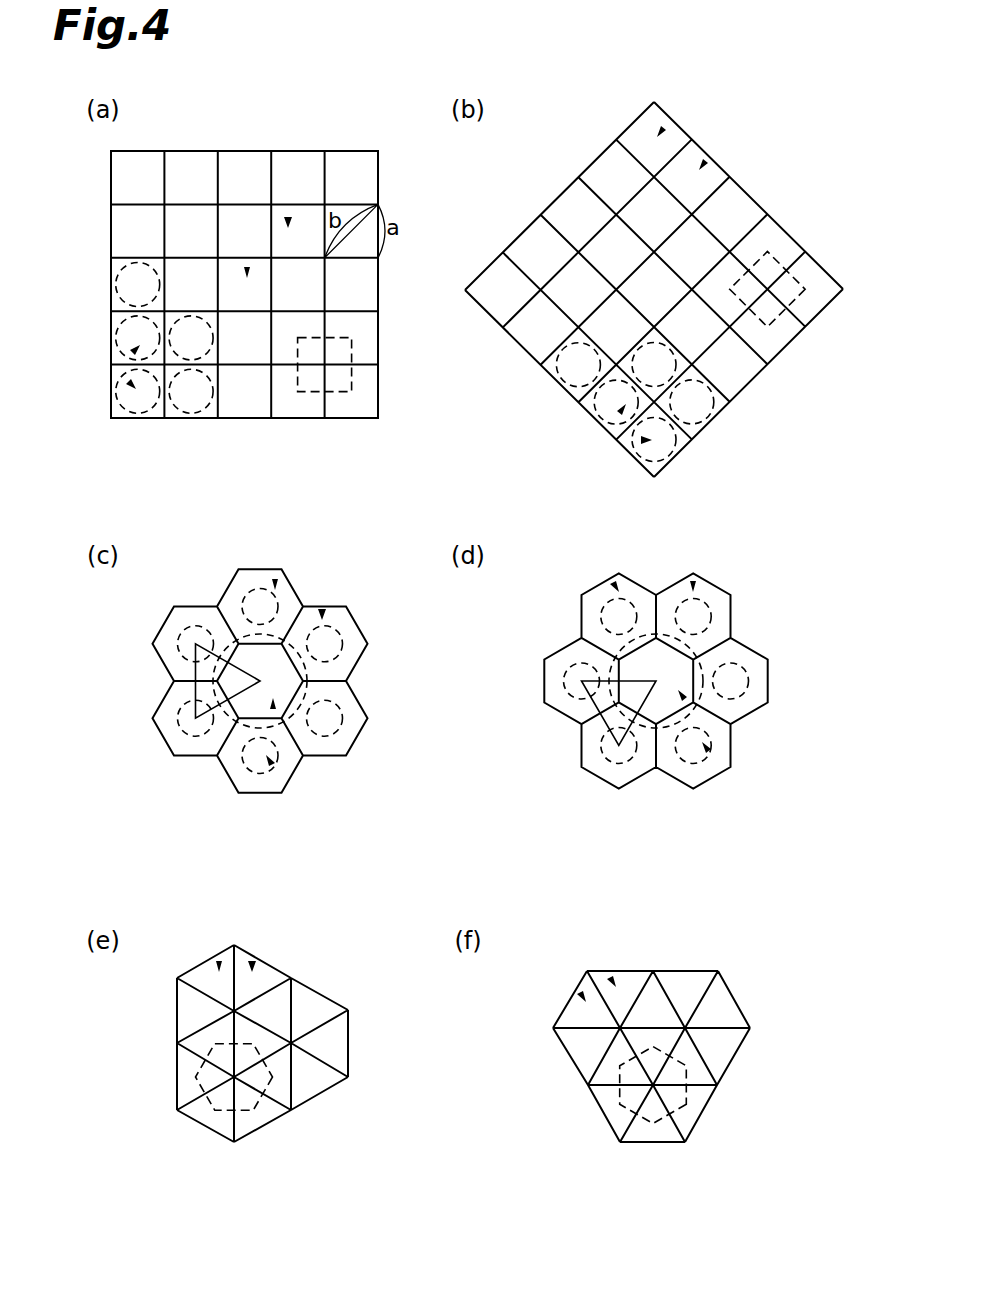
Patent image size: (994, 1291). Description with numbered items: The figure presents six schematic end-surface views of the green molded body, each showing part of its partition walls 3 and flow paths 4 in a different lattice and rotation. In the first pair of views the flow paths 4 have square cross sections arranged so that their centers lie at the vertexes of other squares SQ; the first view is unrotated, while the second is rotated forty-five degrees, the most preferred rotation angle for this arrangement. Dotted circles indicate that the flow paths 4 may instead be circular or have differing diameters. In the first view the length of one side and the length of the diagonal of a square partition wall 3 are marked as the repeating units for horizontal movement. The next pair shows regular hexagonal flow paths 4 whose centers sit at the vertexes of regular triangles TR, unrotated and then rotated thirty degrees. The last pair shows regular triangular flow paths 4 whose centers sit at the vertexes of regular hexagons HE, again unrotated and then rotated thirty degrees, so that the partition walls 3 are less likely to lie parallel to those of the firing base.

The partition wall 3 is at (455, 622).
The flow path 4 is at (428, 538).
The square SQ is at (554, 298).
The regular triangle TR is at (382, 703).
The regular hexagon HE is at (473, 1113).